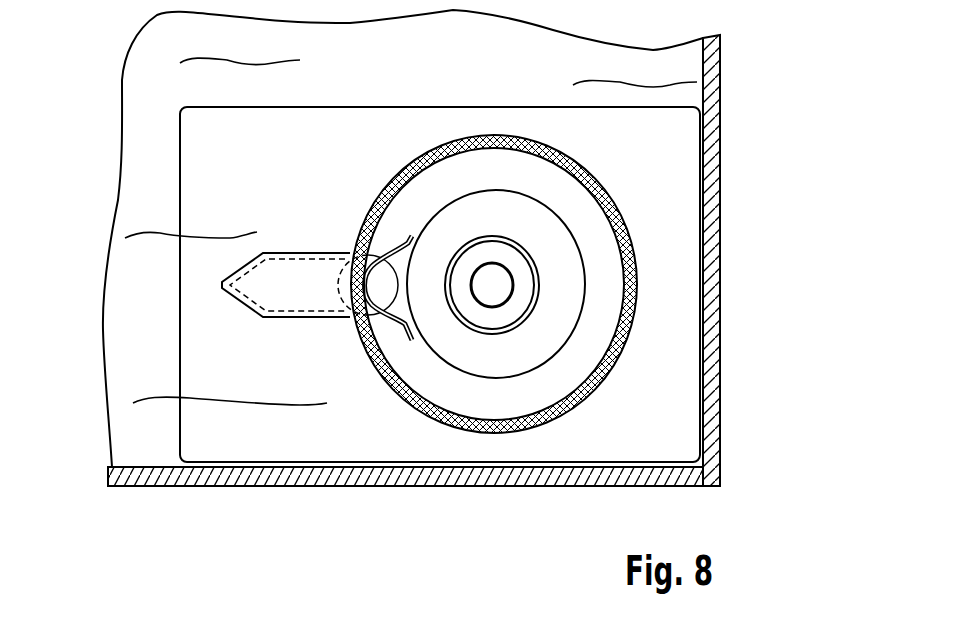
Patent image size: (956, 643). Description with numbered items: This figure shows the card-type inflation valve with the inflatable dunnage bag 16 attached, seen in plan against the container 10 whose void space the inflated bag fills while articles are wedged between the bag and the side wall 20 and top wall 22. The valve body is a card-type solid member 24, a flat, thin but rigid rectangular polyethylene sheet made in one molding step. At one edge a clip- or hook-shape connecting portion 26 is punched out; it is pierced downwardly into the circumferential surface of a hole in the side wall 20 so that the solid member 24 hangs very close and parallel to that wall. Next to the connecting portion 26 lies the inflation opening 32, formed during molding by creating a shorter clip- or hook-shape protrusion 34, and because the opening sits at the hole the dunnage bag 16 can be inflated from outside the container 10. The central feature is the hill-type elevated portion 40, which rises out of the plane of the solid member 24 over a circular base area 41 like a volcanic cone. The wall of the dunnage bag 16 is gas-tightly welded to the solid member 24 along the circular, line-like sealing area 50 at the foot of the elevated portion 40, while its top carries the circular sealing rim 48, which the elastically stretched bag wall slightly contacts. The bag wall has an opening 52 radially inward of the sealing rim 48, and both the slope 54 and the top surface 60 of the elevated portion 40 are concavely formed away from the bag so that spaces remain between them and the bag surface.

The container 10 is at (721, 129).
The inflatable dunnage bag 16 is at (140, 195).
The side wall 20 is at (252, 487).
The top wall 22 is at (714, 278).
The card-type solid member 24 is at (177, 117).
The clip- or hook-shape connecting portion 26 is at (273, 272).
The inflation opening 32 is at (374, 258).
The clip- or hook-shape protrusion 34 is at (385, 272).
The hill-type elevated portion 40 is at (460, 206).
The circular base area 41 is at (580, 250).
The sealing rim 48 is at (522, 247).
The sealing area 50 is at (576, 400).
The opening 52 is at (492, 306).
The slope 54 is at (553, 222).
The top surface 60 is at (497, 250).